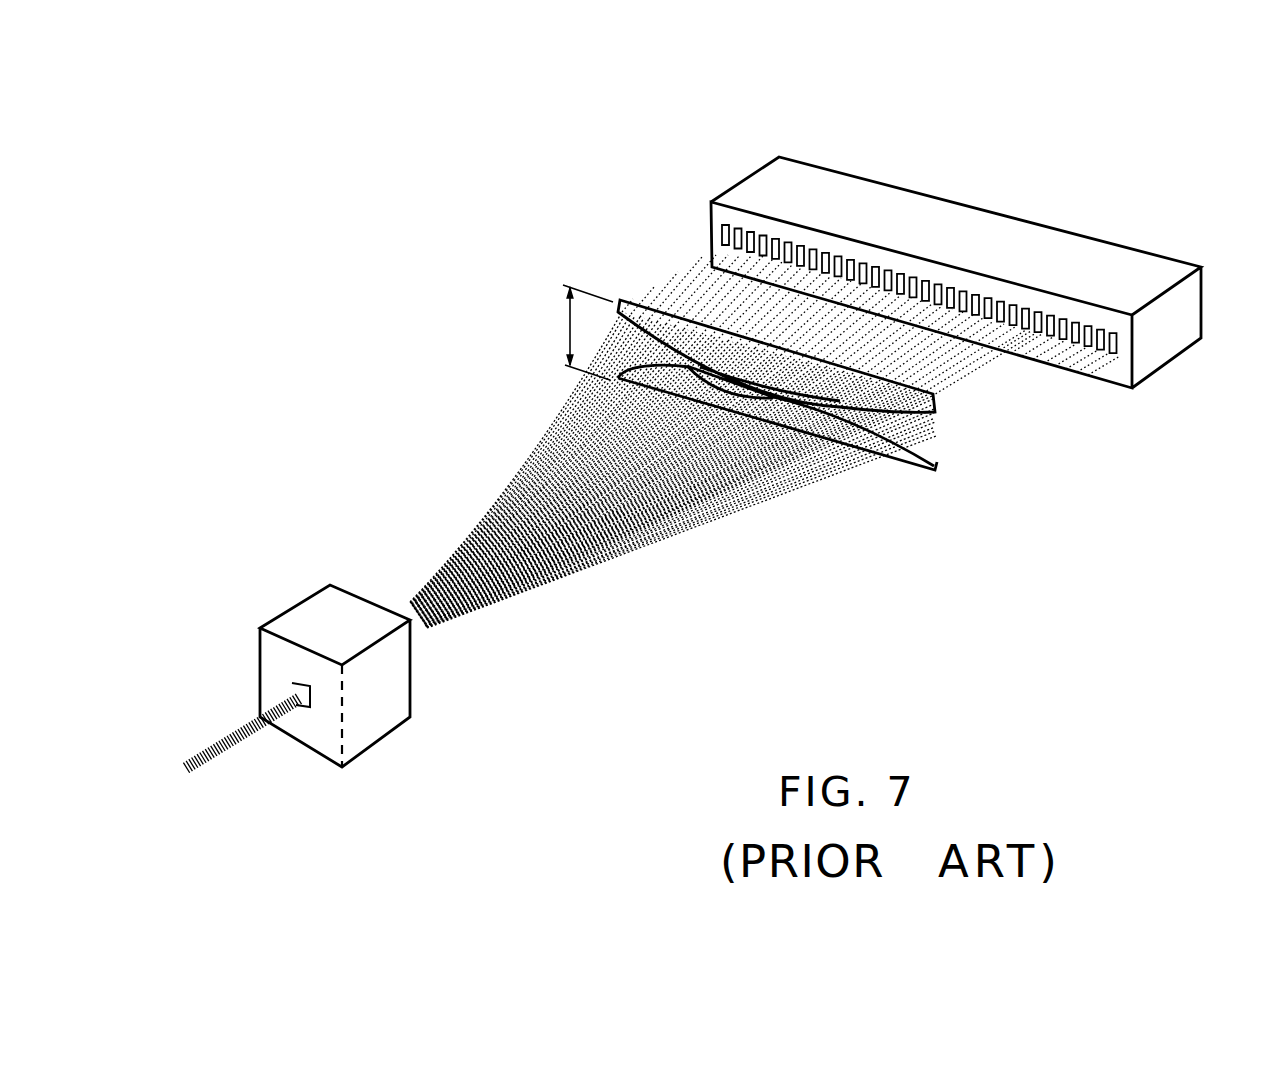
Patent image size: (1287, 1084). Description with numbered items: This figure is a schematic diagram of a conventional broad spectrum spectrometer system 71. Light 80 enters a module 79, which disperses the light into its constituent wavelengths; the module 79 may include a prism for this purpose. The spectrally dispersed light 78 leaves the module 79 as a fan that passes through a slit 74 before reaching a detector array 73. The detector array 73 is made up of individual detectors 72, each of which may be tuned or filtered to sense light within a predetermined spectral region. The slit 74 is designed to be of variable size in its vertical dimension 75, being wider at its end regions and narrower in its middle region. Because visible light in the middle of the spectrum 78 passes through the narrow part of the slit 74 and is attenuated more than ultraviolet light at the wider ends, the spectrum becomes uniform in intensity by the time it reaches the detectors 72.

The broad spectrum spectrometer system 71 is at (565, 98).
The individual detectors 72 is at (1050, 327).
The detector array 73 is at (1117, 273).
The slit 74 is at (688, 368).
The vertical dimension 75 is at (570, 332).
The spectrally dispersed light 78 is at (743, 494).
The module 79 is at (303, 618).
The light 80 is at (218, 764).